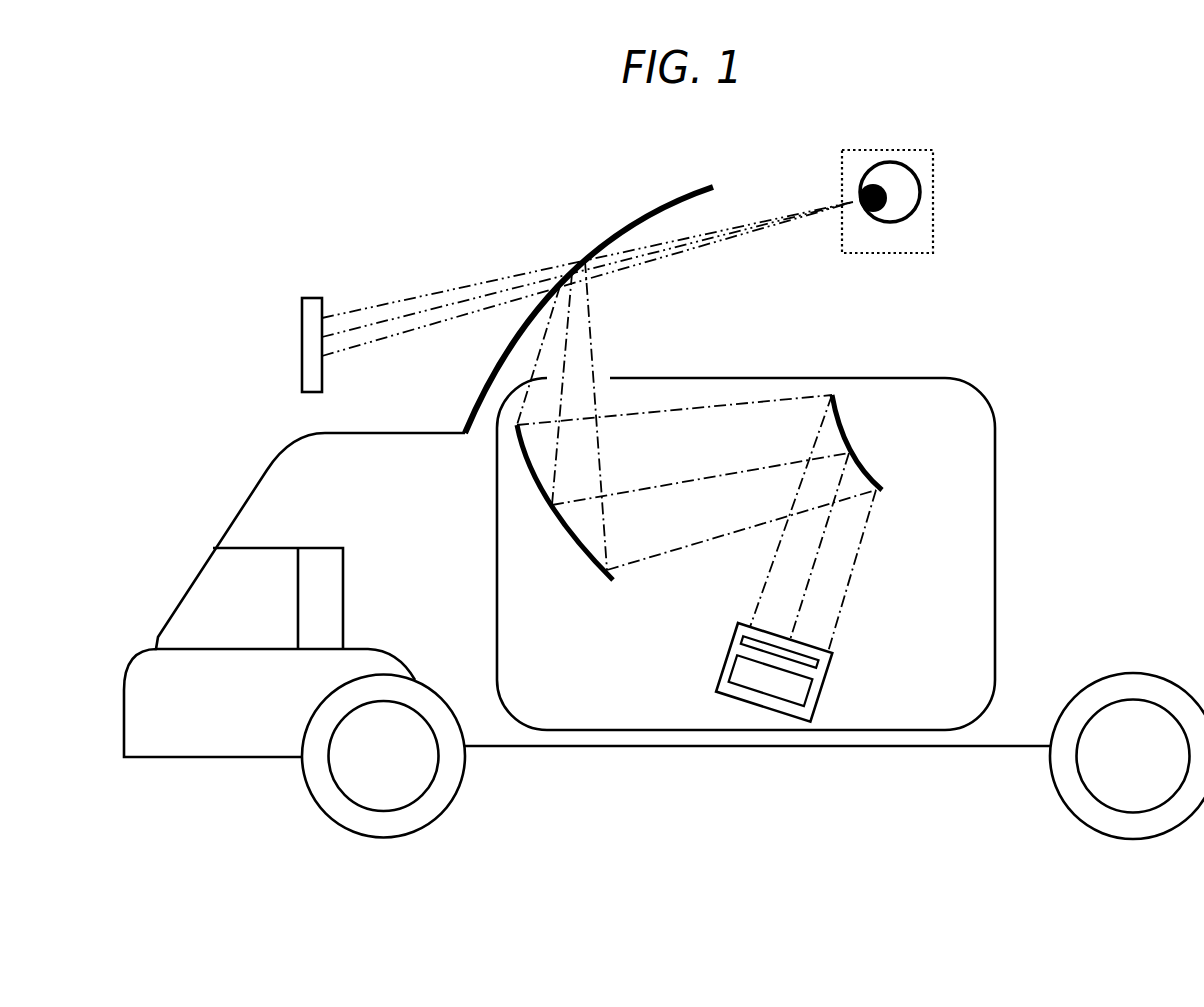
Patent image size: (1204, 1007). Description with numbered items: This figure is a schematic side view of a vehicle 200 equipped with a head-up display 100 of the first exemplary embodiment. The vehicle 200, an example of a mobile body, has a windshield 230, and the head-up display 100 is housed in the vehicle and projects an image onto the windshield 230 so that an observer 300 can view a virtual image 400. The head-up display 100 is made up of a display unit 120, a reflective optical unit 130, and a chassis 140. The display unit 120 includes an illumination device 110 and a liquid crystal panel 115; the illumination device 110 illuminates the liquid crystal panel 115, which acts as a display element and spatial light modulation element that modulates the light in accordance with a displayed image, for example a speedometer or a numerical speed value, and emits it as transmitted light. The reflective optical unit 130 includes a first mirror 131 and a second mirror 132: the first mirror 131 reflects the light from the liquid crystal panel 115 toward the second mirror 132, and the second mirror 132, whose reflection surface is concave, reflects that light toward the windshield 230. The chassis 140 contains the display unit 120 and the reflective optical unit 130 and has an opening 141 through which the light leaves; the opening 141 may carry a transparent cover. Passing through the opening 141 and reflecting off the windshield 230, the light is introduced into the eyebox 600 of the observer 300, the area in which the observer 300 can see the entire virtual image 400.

The head-up display 100 is at (1010, 577).
The illumination device 110 is at (781, 672).
The liquid crystal panel 115 is at (820, 663).
The display unit 120 is at (820, 693).
The reflective optical unit 130 is at (727, 534).
The first mirror 131 is at (861, 460).
The second mirror 132 is at (578, 550).
The chassis 140 is at (995, 423).
The opening 141 is at (577, 380).
The vehicle 200 is at (262, 468).
The windshield 230 is at (642, 218).
The observer 300 is at (913, 180).
The virtual image 400 is at (307, 298).
The eyebox 600 is at (934, 227).